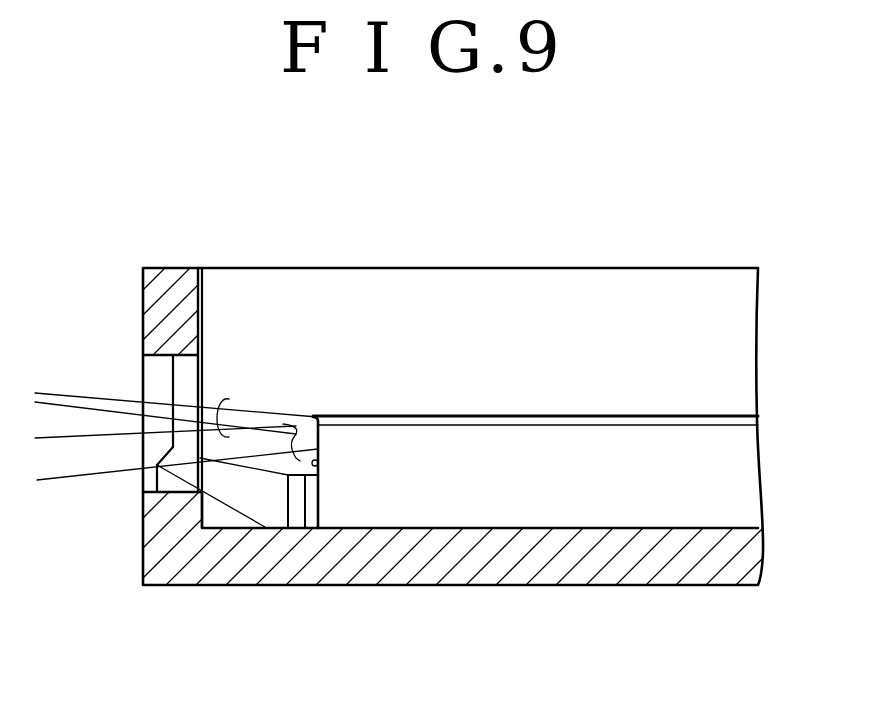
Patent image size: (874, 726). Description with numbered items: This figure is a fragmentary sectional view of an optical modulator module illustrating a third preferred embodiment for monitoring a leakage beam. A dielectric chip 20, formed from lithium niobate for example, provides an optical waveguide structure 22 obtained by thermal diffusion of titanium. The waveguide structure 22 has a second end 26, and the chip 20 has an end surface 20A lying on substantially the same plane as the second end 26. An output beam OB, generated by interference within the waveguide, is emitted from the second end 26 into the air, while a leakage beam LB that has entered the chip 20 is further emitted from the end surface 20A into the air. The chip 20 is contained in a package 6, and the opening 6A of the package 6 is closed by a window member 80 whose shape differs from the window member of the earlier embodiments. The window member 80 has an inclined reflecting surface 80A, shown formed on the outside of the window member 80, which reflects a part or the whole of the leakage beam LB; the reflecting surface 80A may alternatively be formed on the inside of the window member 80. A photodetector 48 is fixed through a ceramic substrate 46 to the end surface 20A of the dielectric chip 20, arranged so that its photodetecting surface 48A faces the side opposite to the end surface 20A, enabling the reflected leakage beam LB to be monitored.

The package 6 is at (570, 577).
The opening 6A is at (142, 356).
The window member 80 is at (180, 387).
The inclined reflecting surface 80A is at (156, 462).
The output beam OB is at (223, 395).
The leakage beam LB is at (283, 424).
The second end 26 is at (315, 416).
The optical waveguide structure 22 is at (570, 420).
The dielectric chip 20 is at (737, 472).
The end surface 20A is at (320, 462).
The photodetector 48 is at (293, 513).
The photodetecting surface 48A is at (287, 497).
The ceramic substrate 46 is at (311, 515).